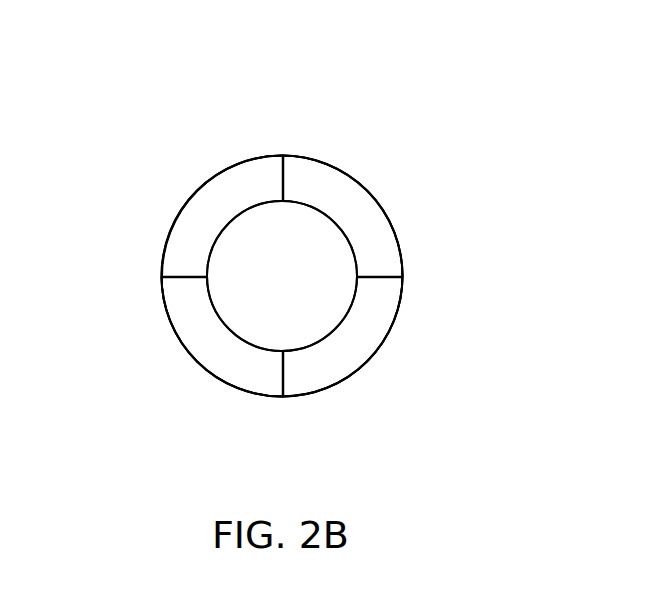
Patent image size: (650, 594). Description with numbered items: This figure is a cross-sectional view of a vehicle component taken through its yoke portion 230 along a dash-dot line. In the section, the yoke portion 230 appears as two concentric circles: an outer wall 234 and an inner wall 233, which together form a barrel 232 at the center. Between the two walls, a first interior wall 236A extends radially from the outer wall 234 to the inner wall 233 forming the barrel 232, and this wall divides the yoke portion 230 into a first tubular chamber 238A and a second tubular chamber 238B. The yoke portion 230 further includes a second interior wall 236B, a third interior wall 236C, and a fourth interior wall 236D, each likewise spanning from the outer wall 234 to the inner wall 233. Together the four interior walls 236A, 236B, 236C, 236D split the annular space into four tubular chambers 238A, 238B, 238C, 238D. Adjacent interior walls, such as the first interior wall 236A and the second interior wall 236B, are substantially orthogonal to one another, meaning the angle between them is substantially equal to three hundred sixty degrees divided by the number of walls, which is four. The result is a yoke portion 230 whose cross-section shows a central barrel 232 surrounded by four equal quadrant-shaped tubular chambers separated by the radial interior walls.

The yoke portion 230 is at (168, 145).
The barrel 232 is at (300, 288).
The inner wall 233 is at (347, 237).
The outer wall 234 is at (352, 177).
The first interior wall 236A is at (282, 177).
The second interior wall 236B is at (383, 277).
The third interior wall 236C is at (285, 377).
The fourth interior wall 236D is at (195, 277).
The first tubular chamber 238A is at (198, 213).
The second tubular chamber 238B is at (320, 188).
The third tubular chamber 238C is at (352, 353).
The fourth tubular chamber 238D is at (210, 353).